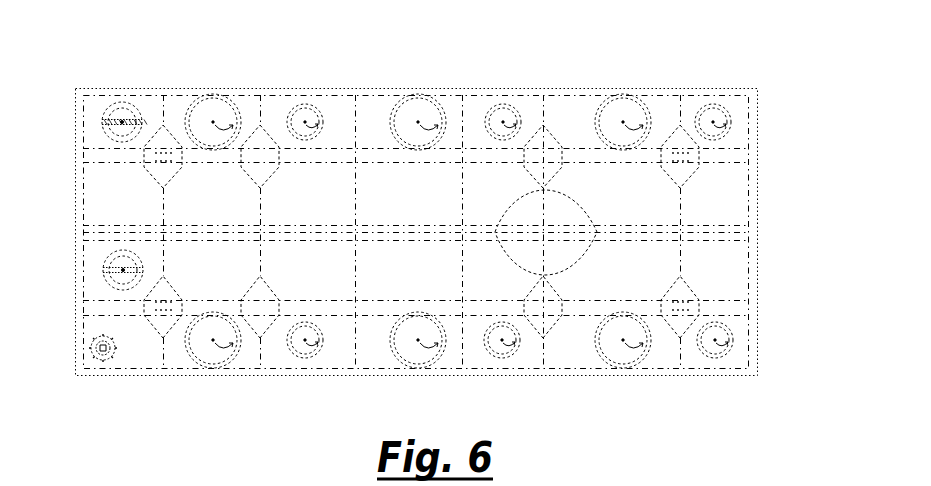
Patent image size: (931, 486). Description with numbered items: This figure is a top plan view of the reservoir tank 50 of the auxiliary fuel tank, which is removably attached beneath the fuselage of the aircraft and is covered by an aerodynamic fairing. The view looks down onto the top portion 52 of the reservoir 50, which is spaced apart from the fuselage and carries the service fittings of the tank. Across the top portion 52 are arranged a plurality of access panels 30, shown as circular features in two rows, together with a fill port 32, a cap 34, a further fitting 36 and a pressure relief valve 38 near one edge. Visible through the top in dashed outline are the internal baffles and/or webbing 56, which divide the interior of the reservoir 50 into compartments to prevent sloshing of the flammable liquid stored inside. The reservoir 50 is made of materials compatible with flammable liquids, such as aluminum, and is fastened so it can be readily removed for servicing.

The access panels 30 is at (212, 96).
The fill port 32 is at (93, 350).
The cap 34 is at (98, 340).
The slotted fastener 36 is at (103, 270).
The pressure relief valve 38 is at (102, 122).
The reservoir tank 50 is at (367, 69).
The top portion 52 is at (752, 138).
The internal baffles and/or webbing 56 is at (748, 212).